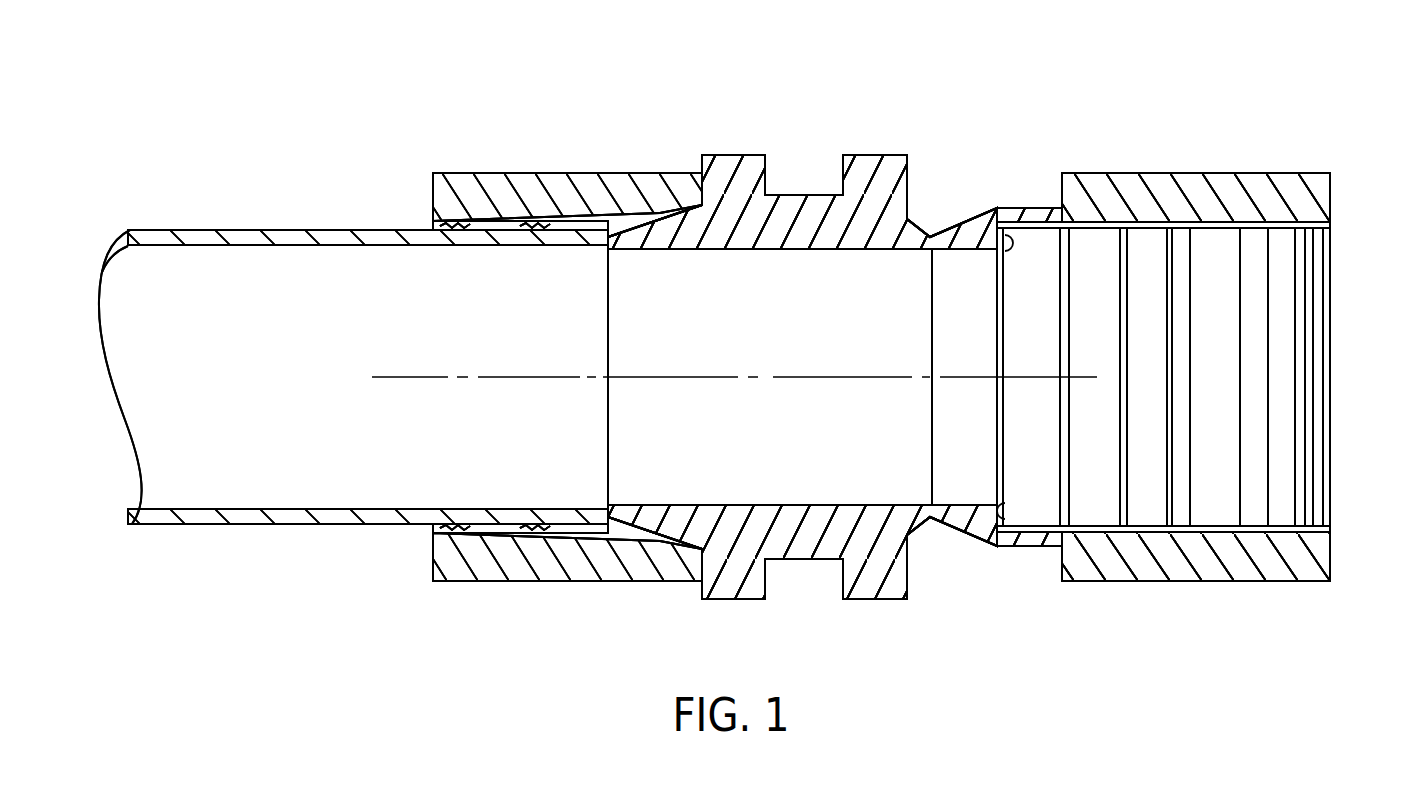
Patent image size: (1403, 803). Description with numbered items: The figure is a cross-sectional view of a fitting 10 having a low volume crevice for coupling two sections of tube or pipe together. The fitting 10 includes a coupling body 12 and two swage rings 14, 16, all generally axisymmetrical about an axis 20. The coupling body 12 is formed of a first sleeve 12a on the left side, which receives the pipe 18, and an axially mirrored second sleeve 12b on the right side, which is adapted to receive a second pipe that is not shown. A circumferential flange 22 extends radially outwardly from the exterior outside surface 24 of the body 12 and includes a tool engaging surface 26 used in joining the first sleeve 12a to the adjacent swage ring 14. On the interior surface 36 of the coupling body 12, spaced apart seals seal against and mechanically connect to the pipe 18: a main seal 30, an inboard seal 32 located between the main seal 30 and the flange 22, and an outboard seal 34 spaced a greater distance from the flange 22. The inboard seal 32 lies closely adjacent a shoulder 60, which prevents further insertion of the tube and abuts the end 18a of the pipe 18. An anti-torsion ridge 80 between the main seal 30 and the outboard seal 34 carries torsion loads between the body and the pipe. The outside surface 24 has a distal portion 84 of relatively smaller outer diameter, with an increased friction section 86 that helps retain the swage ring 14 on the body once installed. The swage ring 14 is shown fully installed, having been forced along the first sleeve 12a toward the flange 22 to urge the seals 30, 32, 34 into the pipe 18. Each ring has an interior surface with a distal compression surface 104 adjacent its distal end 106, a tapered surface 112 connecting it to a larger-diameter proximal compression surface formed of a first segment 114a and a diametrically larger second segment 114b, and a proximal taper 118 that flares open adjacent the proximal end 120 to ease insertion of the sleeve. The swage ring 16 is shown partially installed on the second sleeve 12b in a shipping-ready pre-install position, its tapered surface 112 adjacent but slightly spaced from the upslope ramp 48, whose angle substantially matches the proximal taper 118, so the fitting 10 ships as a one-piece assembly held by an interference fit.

The fitting 10 is at (806, 88).
The coupling body 12 is at (882, 144).
The first sleeve 12a is at (634, 522).
The second sleeve 12b is at (1070, 544).
The swage ring 14 is at (550, 161).
The swage ring 16 is at (1245, 164).
The pipe 18 is at (277, 537).
The end of tube 18a is at (610, 522).
The axis 20 is at (730, 376).
The circumferential flange 22 is at (734, 165).
The exterior outside surface 24 is at (800, 599).
The tool engaging surface 26 is at (768, 173).
The main seal 30 is at (1060, 238).
The inboard seal 32 is at (600, 506).
The outboard seal 34 is at (440, 506).
The interior surface 36 is at (507, 232).
The upslope ramp 48 is at (1100, 215).
The shoulder 60 is at (700, 200).
The anti-torsion ridge 80 is at (1125, 241).
The distal portion 84 is at (480, 530).
The increased friction section 86 is at (460, 209).
The distal compression surface 104 is at (1287, 527).
The swage ring distal end 106 is at (453, 204).
The tapered surface 112 is at (1268, 224).
The first segment 114a is at (1218, 527).
The second segment 114b is at (1130, 222).
The proximal taper 118 is at (1096, 215).
The proximal end 120 is at (1062, 186).